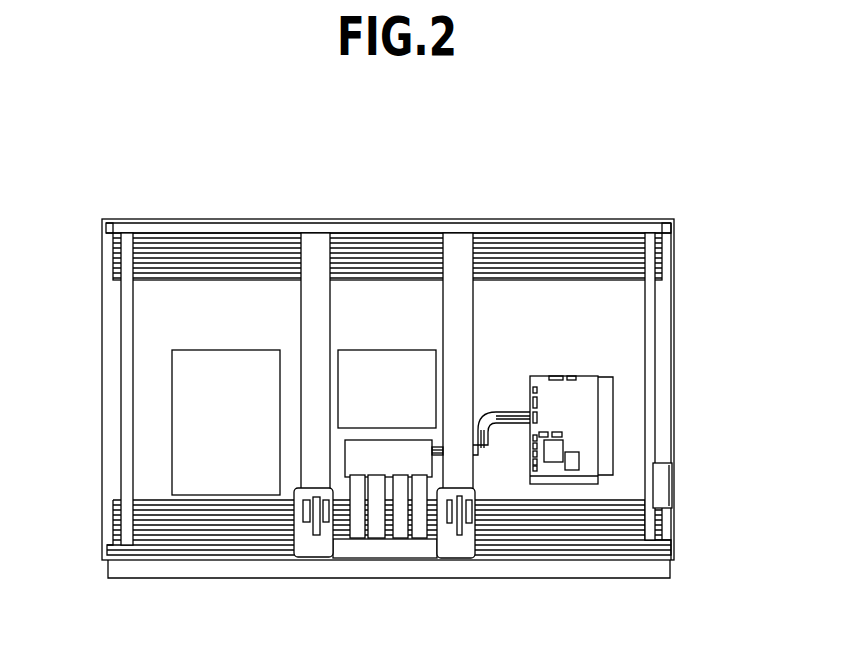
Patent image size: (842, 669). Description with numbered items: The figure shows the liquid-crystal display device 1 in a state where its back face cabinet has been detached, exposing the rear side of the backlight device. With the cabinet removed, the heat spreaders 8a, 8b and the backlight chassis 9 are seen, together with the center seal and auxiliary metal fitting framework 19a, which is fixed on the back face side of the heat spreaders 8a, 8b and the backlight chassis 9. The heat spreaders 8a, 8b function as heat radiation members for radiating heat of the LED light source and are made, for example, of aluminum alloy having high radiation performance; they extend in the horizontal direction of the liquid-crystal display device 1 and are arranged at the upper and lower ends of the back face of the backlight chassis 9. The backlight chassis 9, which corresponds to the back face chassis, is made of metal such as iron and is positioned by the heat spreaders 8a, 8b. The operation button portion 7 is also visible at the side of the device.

The liquid-crystal display device 1 is at (618, 185).
The operation button portion 7 is at (663, 485).
The heat spreader 8a is at (637, 253).
The heat spreader 8b is at (140, 528).
The backlight chassis 9 is at (150, 323).
The center seal and auxiliary metal fitting framework 19a is at (453, 548).